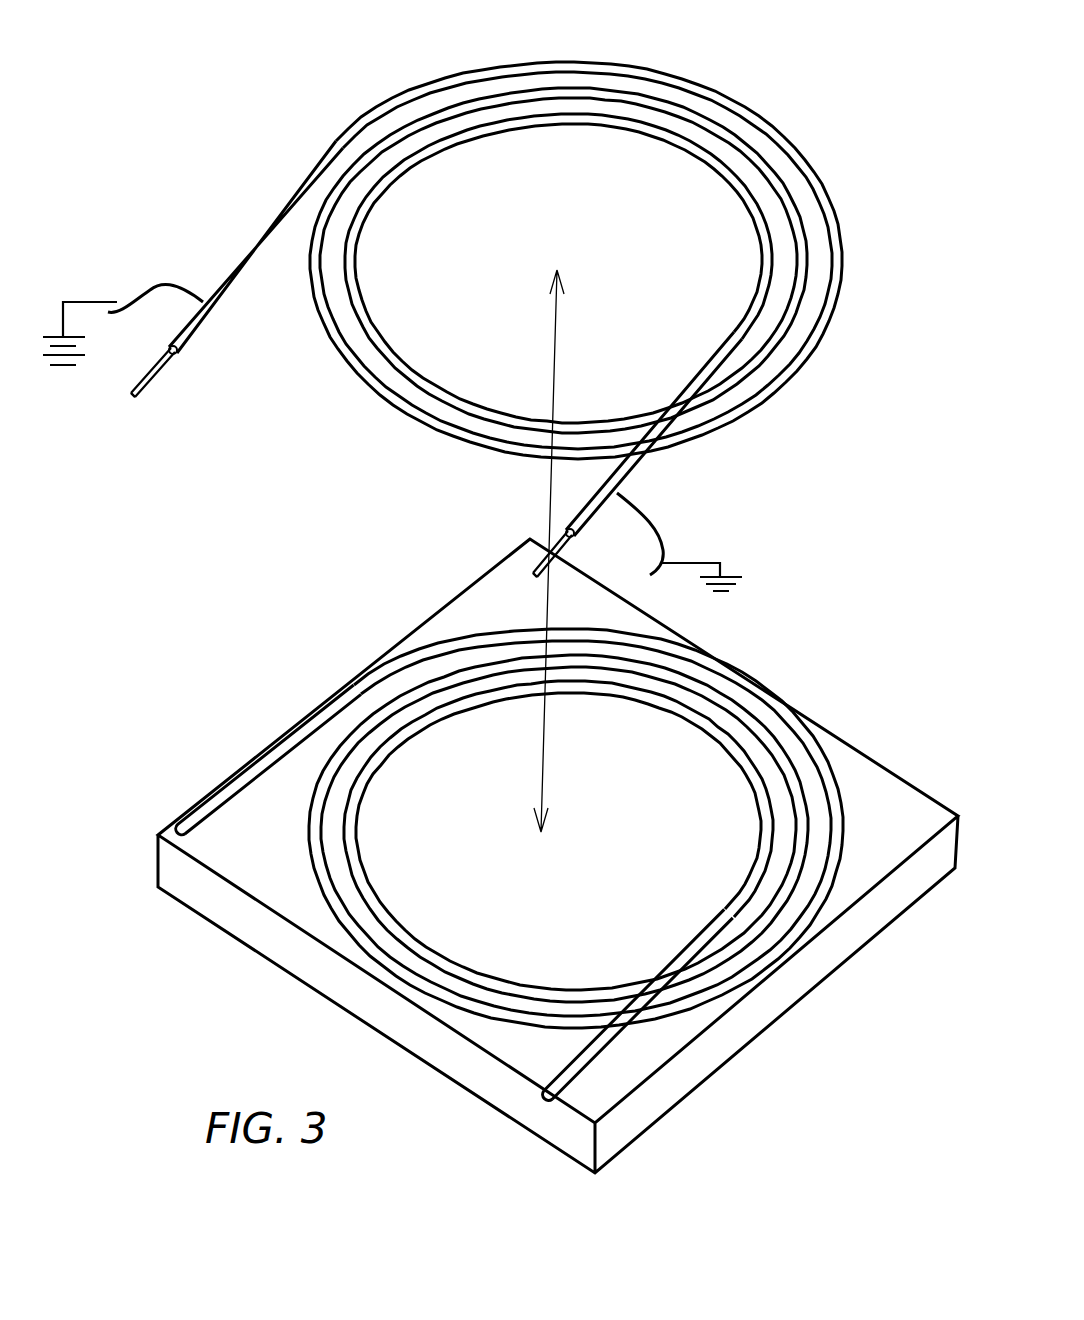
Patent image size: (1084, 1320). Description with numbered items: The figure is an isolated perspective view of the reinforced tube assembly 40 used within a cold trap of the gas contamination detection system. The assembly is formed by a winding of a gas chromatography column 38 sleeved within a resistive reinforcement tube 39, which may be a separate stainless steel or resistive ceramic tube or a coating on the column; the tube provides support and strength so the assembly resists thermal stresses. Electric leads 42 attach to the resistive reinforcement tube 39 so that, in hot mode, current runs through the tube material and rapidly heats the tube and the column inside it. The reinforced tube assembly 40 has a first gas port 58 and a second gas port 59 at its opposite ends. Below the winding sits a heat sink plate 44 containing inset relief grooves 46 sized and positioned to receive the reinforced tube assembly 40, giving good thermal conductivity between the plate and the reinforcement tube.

The reinforced tube assembly 40 is at (857, 266).
The electric leads 42 is at (152, 290).
The resistive reinforcement tube 39 is at (237, 272).
The gas chromatography column 38 is at (154, 376).
The first gas port 58 is at (131, 398).
The second gas port 59 is at (533, 578).
The inset relief grooves 46 is at (347, 740).
The heat sink plate 44 is at (325, 985).